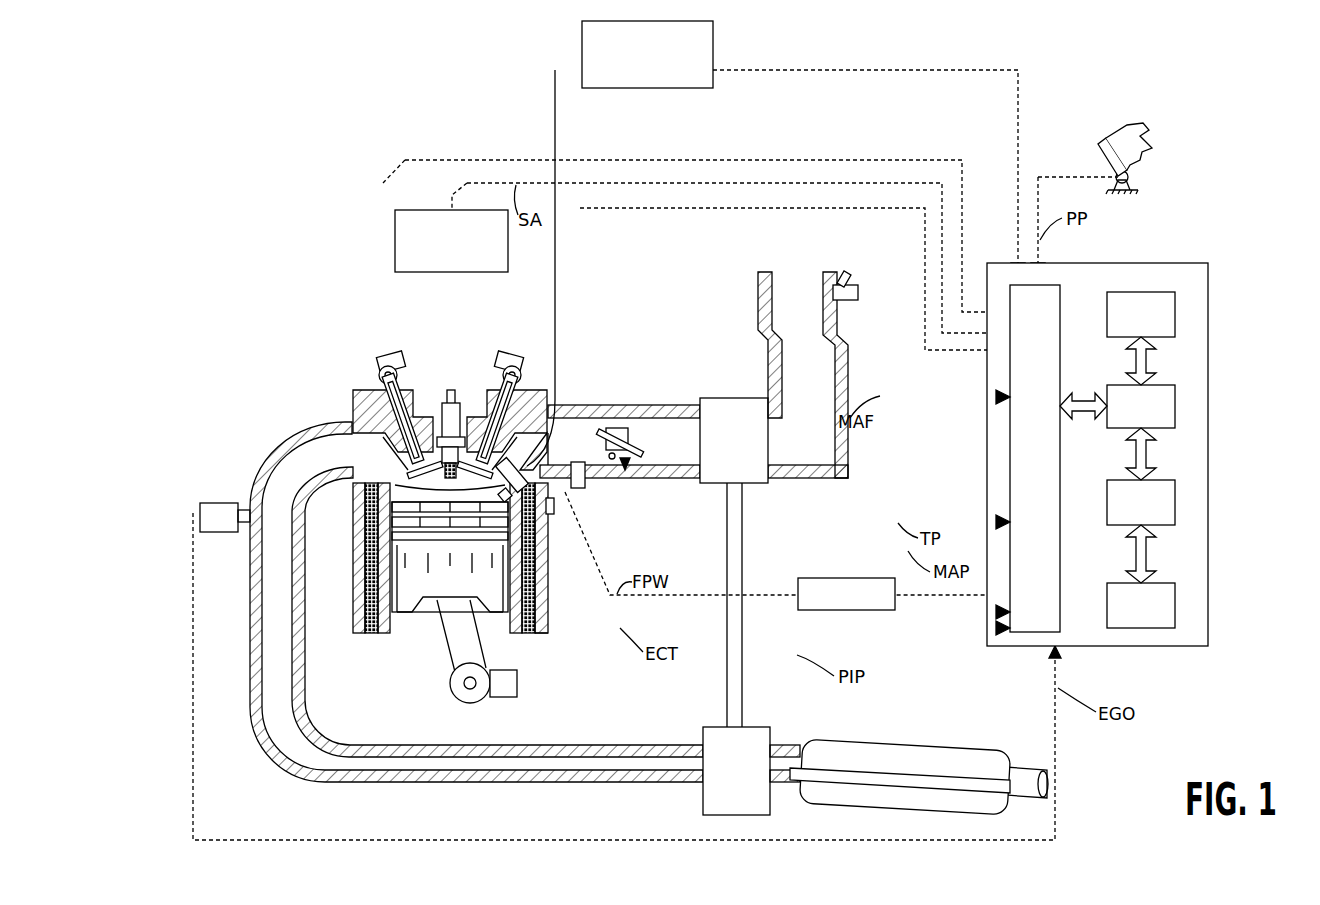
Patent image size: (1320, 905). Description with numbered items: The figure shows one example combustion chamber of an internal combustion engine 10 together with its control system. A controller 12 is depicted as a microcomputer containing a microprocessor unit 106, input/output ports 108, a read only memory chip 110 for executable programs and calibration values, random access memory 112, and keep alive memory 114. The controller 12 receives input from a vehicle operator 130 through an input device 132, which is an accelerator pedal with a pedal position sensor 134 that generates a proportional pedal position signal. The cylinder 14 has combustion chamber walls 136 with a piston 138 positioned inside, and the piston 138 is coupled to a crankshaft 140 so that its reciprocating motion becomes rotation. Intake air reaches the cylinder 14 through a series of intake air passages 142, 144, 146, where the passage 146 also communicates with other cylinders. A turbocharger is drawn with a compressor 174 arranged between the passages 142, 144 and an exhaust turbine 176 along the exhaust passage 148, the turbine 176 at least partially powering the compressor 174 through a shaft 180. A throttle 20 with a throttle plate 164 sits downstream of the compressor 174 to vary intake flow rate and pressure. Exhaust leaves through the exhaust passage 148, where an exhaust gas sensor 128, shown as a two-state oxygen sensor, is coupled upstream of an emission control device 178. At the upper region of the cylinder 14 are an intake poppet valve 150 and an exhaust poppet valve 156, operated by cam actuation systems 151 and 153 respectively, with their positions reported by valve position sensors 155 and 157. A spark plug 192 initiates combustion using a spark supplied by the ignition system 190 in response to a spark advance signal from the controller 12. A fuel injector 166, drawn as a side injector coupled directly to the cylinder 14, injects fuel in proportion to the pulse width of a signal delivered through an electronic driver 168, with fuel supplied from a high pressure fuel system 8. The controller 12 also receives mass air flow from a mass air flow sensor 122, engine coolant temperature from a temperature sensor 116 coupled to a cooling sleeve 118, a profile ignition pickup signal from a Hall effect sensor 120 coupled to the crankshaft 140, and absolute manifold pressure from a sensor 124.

The high pressure fuel system 8 is at (713, 38).
The internal combustion engine 10 is at (185, 95).
The controller 12 is at (1136, 442).
The cylinder 14 is at (357, 522).
The throttle 20 is at (1010, 508).
The microprocessor unit 106 is at (1178, 398).
The input/output ports 108 is at (1062, 293).
The read only memory chip 110 is at (1178, 308).
The random access memory 112 is at (1178, 505).
The keep alive memory 114 is at (1178, 605).
The temperature sensor 116 is at (1010, 612).
The cooling sleeve 118 is at (546, 634).
The Hall effect sensor 120 is at (1010, 628).
The mass air flow sensor 122 is at (1010, 397).
The manifold pressure sensor 124 is at (1010, 550).
The exhaust gas sensor 128 is at (200, 506).
The vehicle operator 130 is at (1135, 196).
The input device 132 is at (1102, 153).
The pedal position sensor 134 is at (1130, 178).
The combustion chamber walls 136 is at (398, 633).
The piston 138 is at (433, 585).
The crankshaft 140 is at (458, 698).
The intake air passage 142 is at (803, 375).
The intake air passage 144 is at (694, 441).
The intake air passage 146 is at (571, 447).
The exhaust passage 148 is at (476, 602).
The intake poppet valve 150 is at (462, 465).
The cam actuation system 151 is at (529, 343).
The cam actuation system 153 is at (379, 331).
The valve position sensor 155 is at (548, 351).
The exhaust poppet valve 156 is at (365, 408).
The valve position sensor 157 is at (378, 366).
The throttle plate 164 is at (1010, 522).
The fuel injector 166 is at (525, 286).
The electronic driver 168 is at (800, 578).
The compressor 174 is at (720, 398).
The exhaust turbine 176 is at (705, 800).
The emission control device 178 is at (972, 743).
The shaft 180 is at (742, 695).
The ignition system 190 is at (415, 210).
The spark plug 192 is at (452, 272).